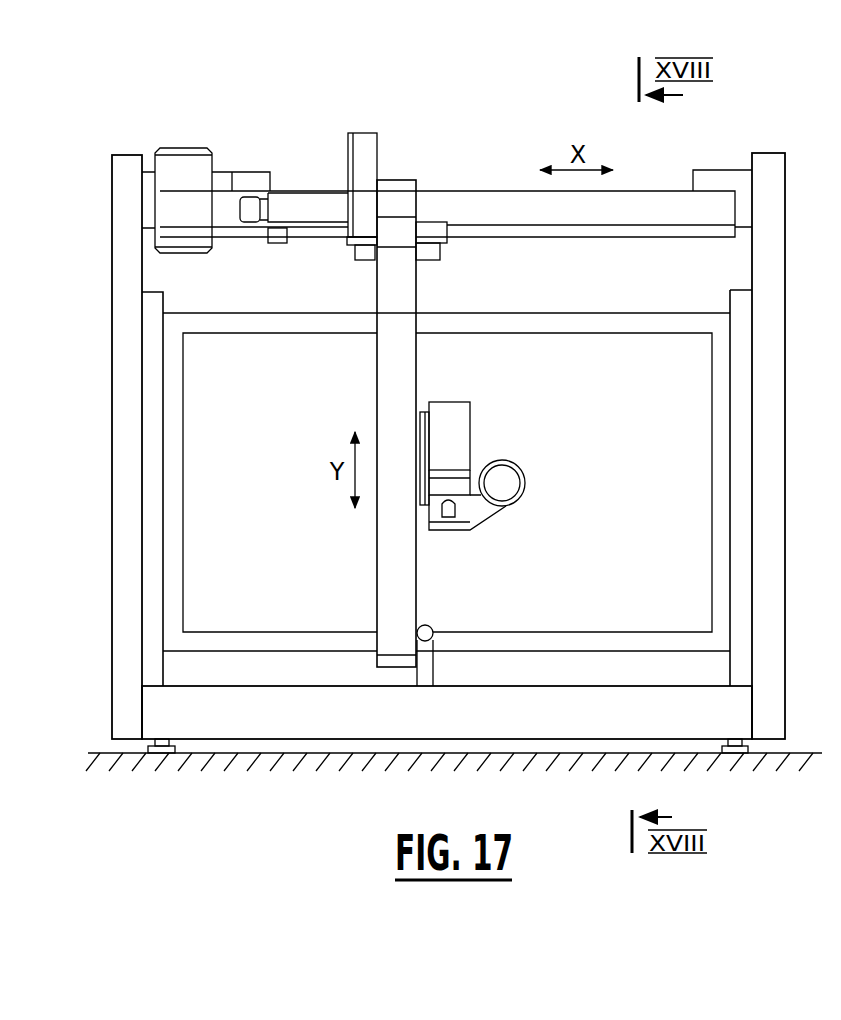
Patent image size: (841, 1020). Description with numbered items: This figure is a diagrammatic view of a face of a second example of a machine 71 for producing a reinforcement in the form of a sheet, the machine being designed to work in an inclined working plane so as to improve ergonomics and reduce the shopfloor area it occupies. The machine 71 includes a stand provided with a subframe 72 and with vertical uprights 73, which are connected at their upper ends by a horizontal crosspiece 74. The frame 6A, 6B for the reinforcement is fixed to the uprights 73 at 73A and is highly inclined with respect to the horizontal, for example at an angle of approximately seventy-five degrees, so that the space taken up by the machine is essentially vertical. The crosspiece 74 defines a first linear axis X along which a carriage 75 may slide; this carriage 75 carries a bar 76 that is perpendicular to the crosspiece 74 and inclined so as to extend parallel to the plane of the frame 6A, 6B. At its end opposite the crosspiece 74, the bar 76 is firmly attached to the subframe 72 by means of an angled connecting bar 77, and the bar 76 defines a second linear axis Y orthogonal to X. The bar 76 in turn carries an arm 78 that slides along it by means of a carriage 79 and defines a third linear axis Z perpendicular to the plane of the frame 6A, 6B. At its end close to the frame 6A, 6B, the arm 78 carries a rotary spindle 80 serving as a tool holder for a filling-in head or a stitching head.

The machine 71 is at (456, 172).
The subframe 72 is at (386, 715).
The vertical uprights 73 is at (133, 462).
The fixing point 73A is at (153, 535).
The horizontal crosspiece 74 is at (660, 210).
The carriage 75 is at (302, 177).
The bar 76 is at (386, 360).
The angled connecting bar 77 is at (425, 668).
The arm 78 is at (455, 405).
The carriage 79 is at (425, 458).
The rotary spindle 80 is at (510, 487).
The frame 6A is at (511, 320).
The frame 6B is at (620, 356).